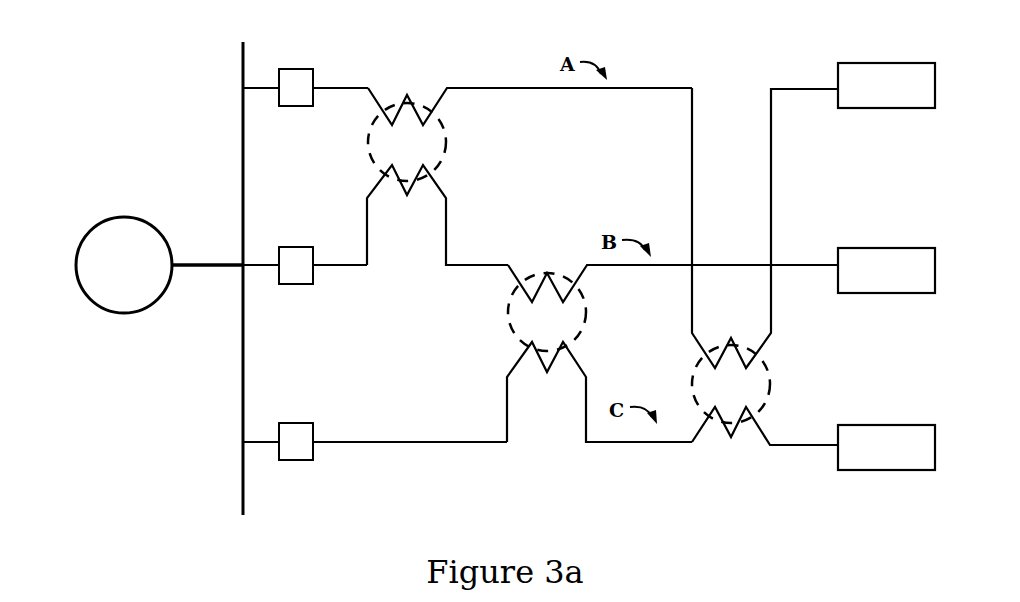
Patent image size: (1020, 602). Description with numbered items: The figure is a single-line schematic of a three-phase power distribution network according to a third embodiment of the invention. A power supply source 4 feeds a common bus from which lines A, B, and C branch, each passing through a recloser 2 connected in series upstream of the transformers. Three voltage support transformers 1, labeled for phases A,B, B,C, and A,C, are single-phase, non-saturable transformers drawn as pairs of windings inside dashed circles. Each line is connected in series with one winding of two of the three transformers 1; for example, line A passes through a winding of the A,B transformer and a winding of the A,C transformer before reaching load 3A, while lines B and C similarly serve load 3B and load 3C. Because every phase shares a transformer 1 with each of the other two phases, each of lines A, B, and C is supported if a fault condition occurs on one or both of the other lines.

The voltage support transformer (VST) 1 is at (602, 266).
The recloser 2 is at (375, 264).
The load 3A is at (886, 85).
The load 3B is at (886, 270).
The load 3C is at (886, 447).
The power supply source 4 is at (159, 265).